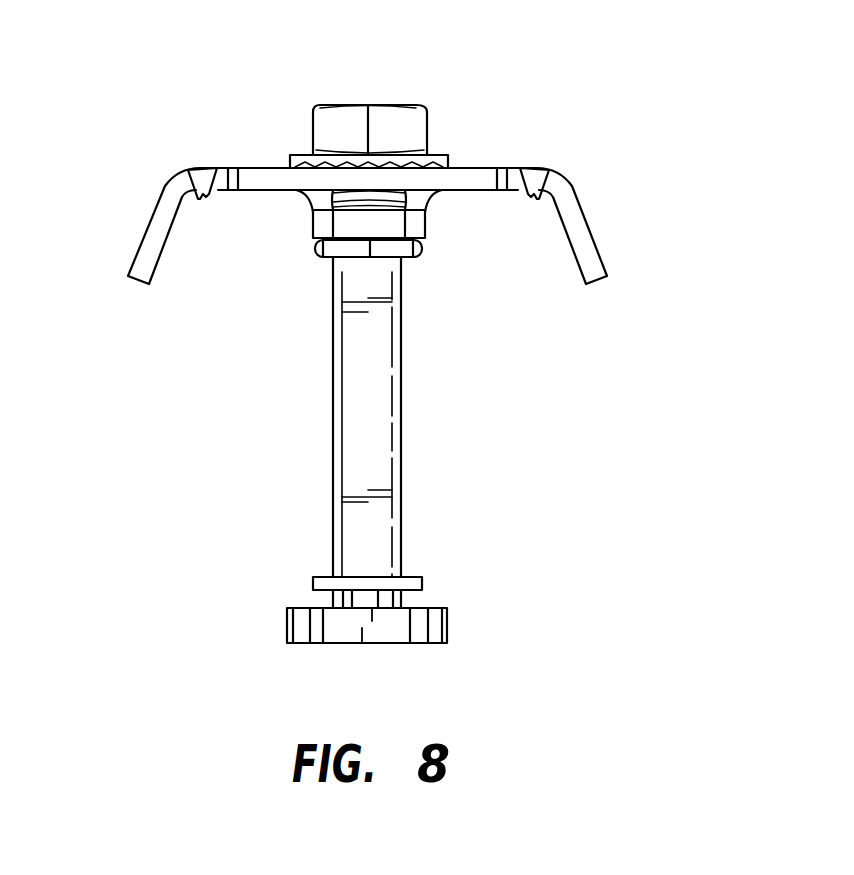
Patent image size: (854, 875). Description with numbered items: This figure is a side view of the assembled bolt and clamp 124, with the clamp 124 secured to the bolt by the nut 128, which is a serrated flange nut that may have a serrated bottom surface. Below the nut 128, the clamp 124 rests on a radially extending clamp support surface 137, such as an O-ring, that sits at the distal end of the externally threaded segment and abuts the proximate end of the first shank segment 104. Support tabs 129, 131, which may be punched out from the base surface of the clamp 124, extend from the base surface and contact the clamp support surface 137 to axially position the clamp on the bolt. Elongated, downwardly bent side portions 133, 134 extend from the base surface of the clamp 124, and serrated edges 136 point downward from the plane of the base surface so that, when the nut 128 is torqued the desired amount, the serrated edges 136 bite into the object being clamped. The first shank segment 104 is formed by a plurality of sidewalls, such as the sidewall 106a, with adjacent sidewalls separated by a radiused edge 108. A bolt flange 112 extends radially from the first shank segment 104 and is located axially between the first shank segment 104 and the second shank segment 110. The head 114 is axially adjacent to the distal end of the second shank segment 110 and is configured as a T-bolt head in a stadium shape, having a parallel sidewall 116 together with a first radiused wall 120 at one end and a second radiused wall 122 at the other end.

The first shank segment 104 is at (331, 440).
The sidewall 106a is at (373, 447).
The radiused edge 108 is at (345, 353).
The second shank segment 110 is at (402, 600).
The bolt flange 112 is at (313, 577).
The head 114 is at (332, 648).
The first sidewall of head 116 is at (384, 632).
The first radiused wall 120 is at (447, 628).
The second radiused wall 122 is at (288, 630).
The clamp 124 is at (462, 163).
The nut 128 is at (313, 110).
The support tab 129 is at (302, 200).
The support tab 131 is at (423, 228).
The downwardly bent side portion 133 is at (142, 242).
The downwardly bent side portion 134 is at (598, 248).
The serrated edges 136 is at (210, 195).
The radially extending clamp support surface 137 is at (418, 256).